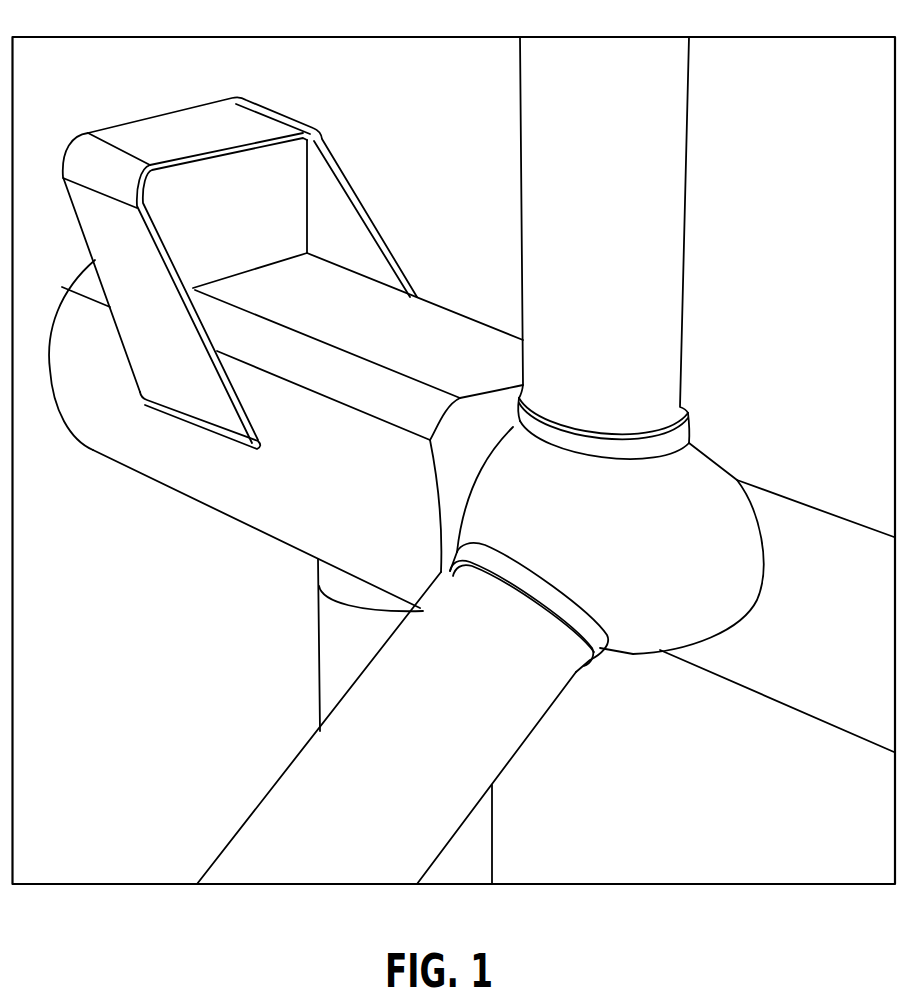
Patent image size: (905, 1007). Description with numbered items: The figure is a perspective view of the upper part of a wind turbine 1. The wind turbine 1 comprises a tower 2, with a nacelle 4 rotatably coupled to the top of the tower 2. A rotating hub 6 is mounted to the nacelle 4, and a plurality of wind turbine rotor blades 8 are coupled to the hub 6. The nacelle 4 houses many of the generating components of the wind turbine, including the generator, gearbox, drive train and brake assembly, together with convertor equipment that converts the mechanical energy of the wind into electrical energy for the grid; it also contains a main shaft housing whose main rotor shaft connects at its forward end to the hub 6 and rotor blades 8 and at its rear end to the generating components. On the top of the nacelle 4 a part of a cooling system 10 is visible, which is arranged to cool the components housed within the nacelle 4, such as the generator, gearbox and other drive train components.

The wind turbine 1 is at (420, 131).
The tower 2 is at (493, 850).
The nacelle 4 is at (469, 341).
The rotating hub 6 is at (702, 470).
The wind turbine rotor blades 8 is at (657, 237).
The cooling system 10 is at (352, 221).